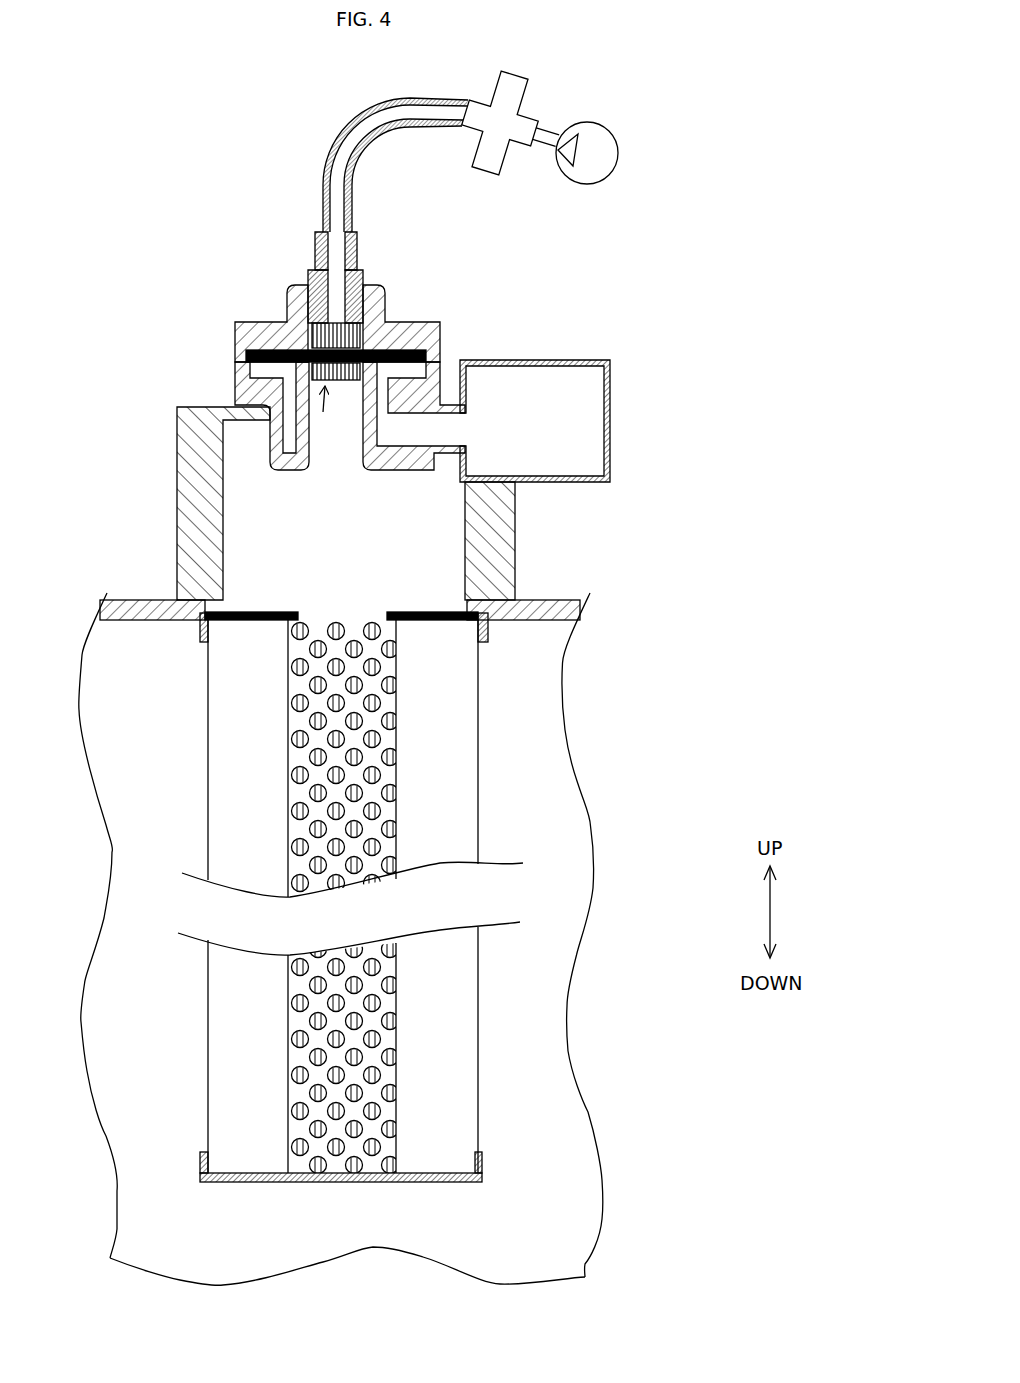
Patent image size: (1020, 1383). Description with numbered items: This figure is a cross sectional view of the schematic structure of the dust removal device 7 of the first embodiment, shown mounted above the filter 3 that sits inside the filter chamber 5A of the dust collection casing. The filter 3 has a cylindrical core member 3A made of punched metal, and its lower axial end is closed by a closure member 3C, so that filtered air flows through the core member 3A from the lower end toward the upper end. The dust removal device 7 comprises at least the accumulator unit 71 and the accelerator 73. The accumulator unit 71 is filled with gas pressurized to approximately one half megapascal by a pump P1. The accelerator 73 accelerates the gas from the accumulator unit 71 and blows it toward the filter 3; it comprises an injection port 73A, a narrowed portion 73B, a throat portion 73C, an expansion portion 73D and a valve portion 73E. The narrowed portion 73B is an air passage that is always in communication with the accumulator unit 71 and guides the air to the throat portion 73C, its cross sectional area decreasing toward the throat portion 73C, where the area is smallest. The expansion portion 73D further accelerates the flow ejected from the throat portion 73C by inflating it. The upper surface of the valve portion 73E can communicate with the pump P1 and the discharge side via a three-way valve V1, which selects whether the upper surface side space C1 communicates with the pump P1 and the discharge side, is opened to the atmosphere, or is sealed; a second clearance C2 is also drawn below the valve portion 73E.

The dust removal device 7 is at (475, 315).
The accumulator unit 71 is at (555, 360).
The accelerator 73 is at (290, 403).
The injection port 73A is at (345, 388).
The narrowed portion 73B is at (285, 420).
The throat portion 73C is at (325, 392).
The expansion portion 73D is at (358, 395).
The valve portion 73E is at (388, 296).
The upper surface side space C1 is at (296, 350).
The clearance C2 is at (250, 368).
The three-way valve V1 is at (515, 72).
The pump P1 is at (612, 138).
The filter 3 is at (416, 930).
The core member 3A is at (388, 670).
The closure member 3C is at (372, 1182).
The filter chamber 5A is at (547, 810).